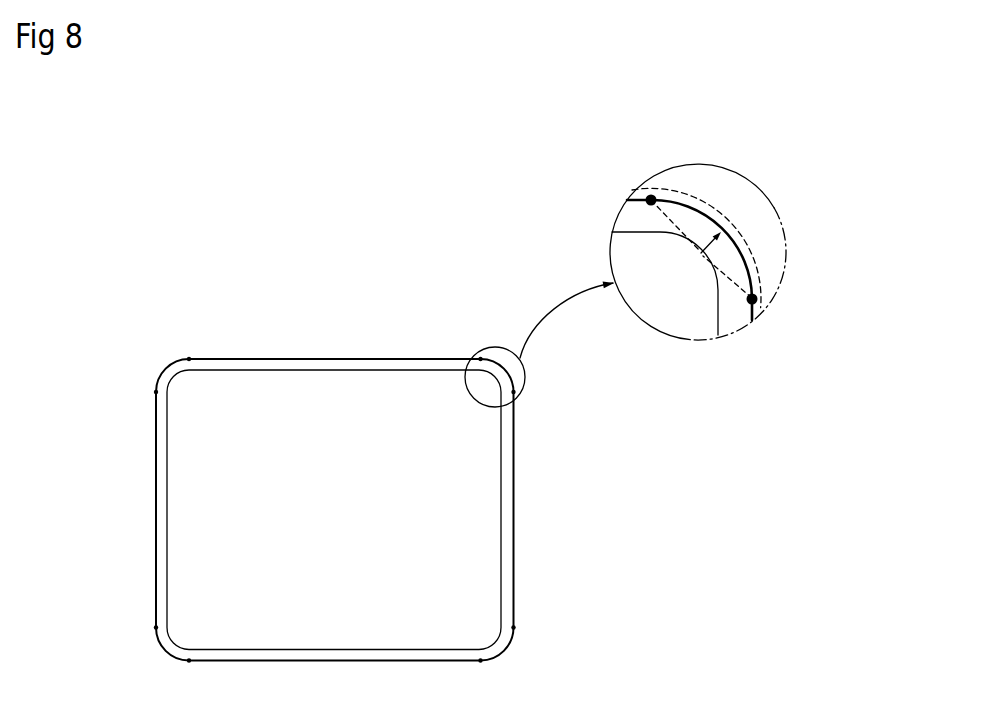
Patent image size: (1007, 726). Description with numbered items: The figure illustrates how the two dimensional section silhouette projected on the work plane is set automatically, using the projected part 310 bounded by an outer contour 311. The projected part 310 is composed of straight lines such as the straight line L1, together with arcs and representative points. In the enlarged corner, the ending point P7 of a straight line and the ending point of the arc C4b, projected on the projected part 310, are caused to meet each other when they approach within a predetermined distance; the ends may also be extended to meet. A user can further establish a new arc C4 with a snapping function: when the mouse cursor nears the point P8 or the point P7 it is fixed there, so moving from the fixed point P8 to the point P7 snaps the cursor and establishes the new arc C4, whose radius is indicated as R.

The projected part 310 is at (187, 555).
The outer edge / frame of display panel 311 is at (165, 471).
The straight line L1 is at (333, 358).
The new arc C4 is at (748, 318).
The arc C4b is at (728, 222).
The radius of curvature of corner R is at (701, 249).
The ending point P7 is at (757, 300).
The point P8 is at (650, 198).